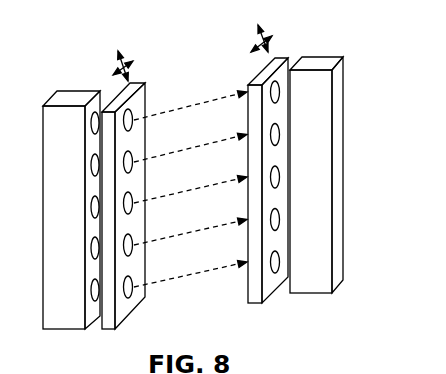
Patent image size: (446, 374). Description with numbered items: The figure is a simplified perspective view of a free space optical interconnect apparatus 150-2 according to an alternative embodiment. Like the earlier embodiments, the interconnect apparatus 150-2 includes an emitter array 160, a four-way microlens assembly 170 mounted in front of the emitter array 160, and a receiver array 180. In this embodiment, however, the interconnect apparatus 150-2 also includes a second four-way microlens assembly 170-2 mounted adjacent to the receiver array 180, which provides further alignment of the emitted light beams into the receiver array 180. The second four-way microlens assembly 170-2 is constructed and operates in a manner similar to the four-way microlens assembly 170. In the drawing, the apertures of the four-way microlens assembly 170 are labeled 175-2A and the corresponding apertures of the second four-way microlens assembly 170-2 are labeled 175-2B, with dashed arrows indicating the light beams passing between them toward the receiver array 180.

The free space optical interconnect apparatus 150-2 is at (366, 133).
The emitter array 160 is at (70, 92).
The four-way microlens assembly 170 is at (147, 83).
The apertures of first aperture plate 175-2A is at (131, 121).
The second four-way microlens assembly 170-2 is at (263, 84).
The apertures of second aperture plate 175-2B is at (268, 82).
The receiver array 180 is at (337, 80).